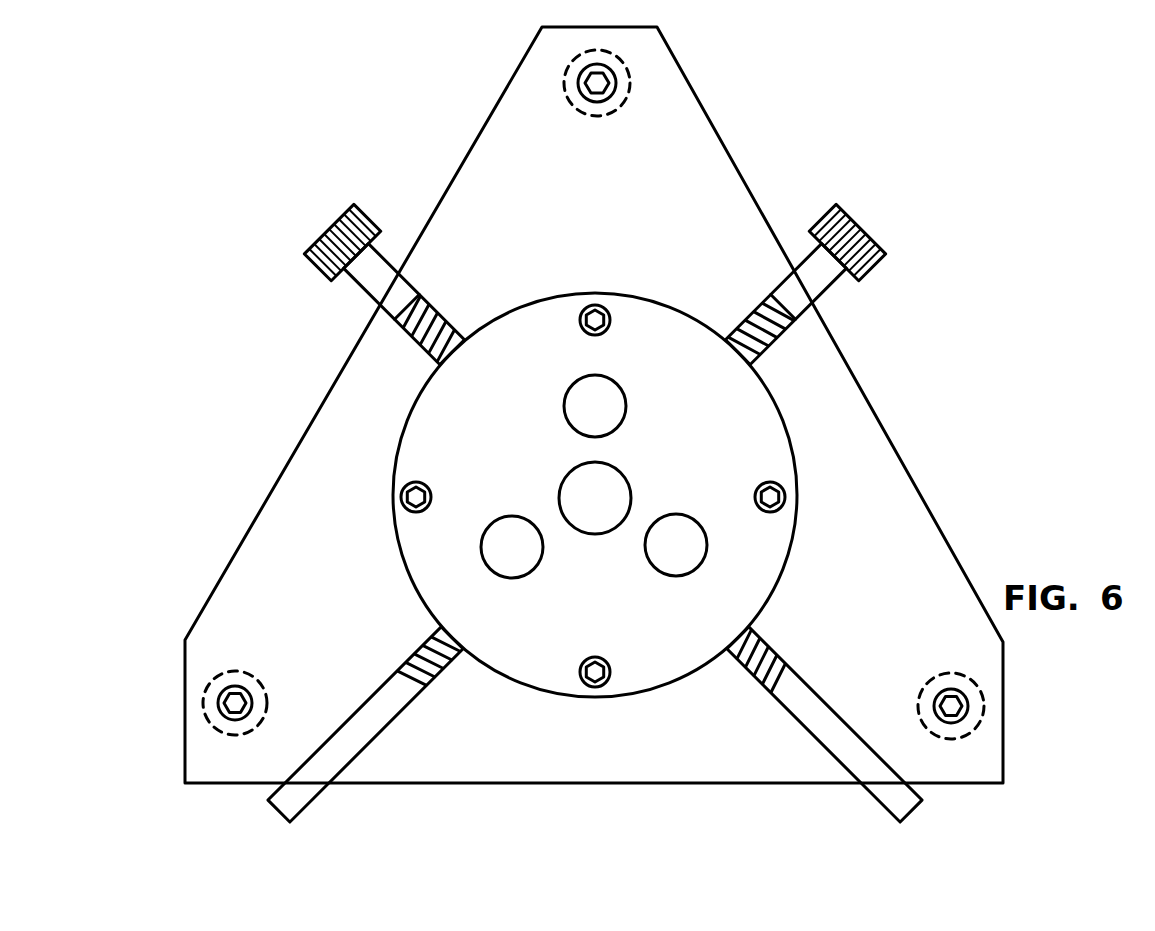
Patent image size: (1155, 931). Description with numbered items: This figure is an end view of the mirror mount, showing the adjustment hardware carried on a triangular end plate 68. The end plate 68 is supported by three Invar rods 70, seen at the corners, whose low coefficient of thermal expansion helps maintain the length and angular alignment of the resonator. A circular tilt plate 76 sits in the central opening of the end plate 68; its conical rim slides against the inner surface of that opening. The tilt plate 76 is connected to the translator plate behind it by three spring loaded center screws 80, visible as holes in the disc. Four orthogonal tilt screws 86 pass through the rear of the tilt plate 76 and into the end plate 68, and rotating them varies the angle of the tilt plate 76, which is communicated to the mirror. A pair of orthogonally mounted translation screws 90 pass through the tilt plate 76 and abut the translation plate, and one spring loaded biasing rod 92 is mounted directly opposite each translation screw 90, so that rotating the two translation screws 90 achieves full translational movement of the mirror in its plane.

The end plate 68 is at (700, 143).
The Invar rods 70 is at (609, 73).
The tilt plate 76 is at (658, 328).
The spring loaded center screws 80 is at (621, 416).
The tilt screws 86 is at (585, 312).
The translation screws 90 is at (318, 236).
The spring loaded biasing rod 92 is at (300, 798).